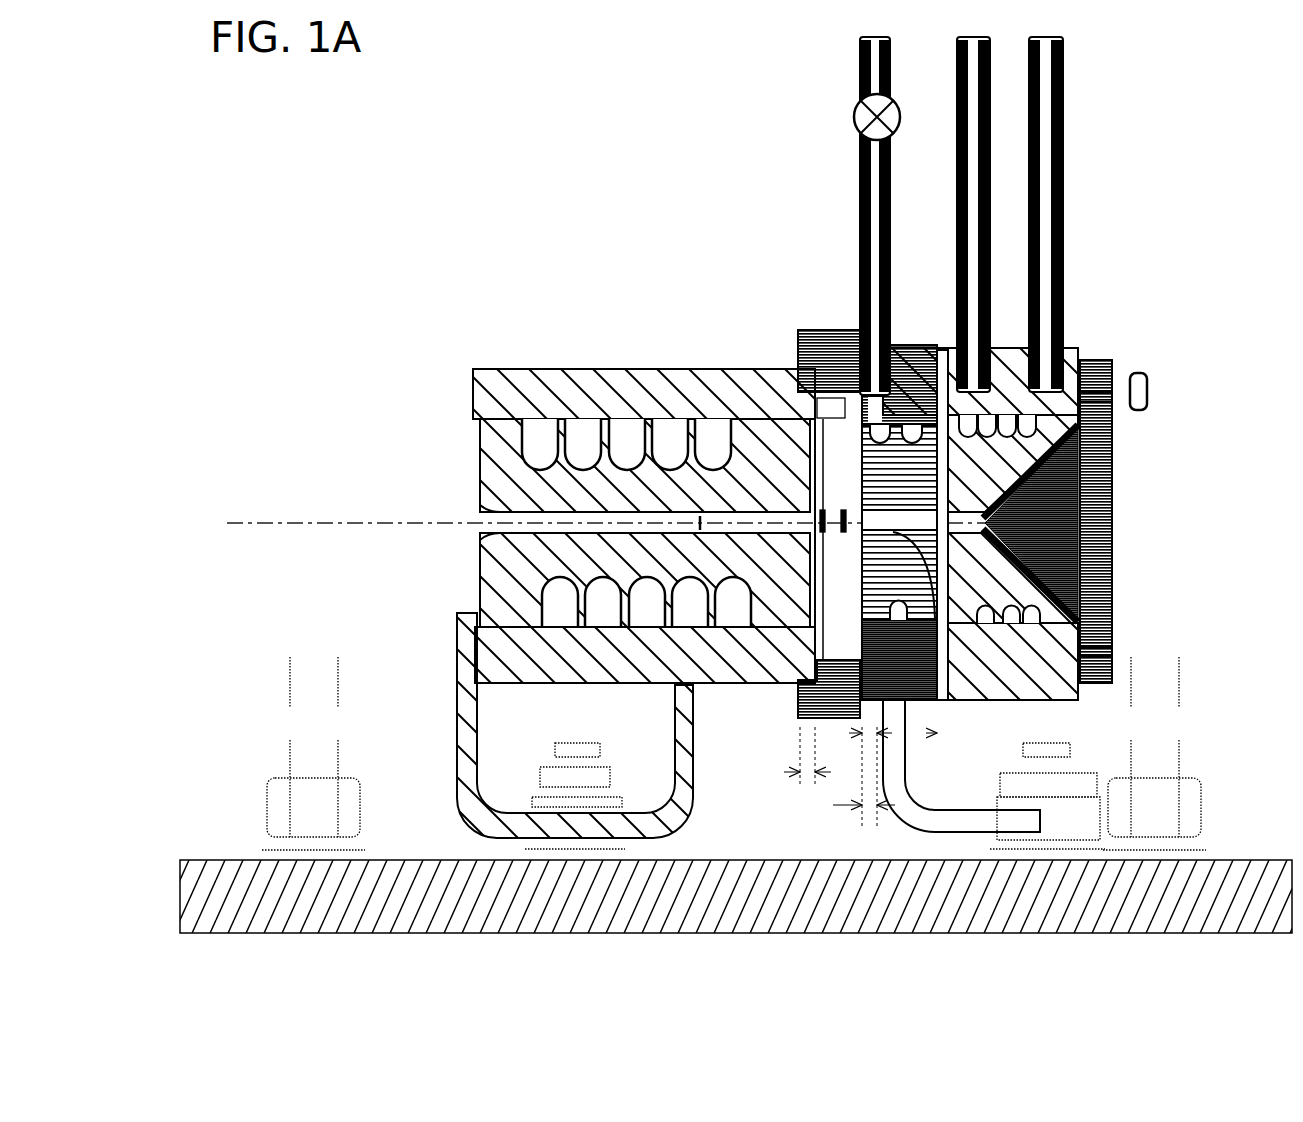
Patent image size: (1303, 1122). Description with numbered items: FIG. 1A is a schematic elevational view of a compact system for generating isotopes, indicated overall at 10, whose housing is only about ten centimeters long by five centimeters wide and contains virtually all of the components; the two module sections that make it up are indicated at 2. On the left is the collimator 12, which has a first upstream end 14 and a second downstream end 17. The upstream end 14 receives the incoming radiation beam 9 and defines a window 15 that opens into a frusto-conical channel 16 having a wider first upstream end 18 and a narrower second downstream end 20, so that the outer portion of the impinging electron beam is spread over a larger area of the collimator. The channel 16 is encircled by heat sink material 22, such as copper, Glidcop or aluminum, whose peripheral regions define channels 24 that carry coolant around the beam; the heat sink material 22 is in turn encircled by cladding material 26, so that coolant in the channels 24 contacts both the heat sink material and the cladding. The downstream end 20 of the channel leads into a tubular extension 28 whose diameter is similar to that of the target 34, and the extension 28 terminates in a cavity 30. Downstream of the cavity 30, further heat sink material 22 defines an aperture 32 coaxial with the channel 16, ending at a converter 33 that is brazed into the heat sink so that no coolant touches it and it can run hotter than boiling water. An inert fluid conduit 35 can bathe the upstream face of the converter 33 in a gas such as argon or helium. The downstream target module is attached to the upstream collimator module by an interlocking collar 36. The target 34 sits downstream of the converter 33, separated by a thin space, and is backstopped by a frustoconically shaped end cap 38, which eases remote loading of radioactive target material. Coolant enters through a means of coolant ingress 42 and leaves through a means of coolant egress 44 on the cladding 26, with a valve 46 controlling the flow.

The mold half 2 is at (399, 343).
The radiation beam 9 is at (307, 525).
The molding apparatus 10 is at (543, 213).
The collimator 12 is at (522, 587).
The first upstream end 14 is at (480, 596).
The window 15 is at (477, 538).
The frusto-conical shaped channel 16 is at (596, 522).
The second downstream end 17 is at (1105, 613).
The first upstream end of channel 18 is at (480, 512).
The second downstream end of channel 20 is at (700, 523).
The heat sink material 22 is at (1170, 440).
The coolant channels 24 is at (627, 443).
The cladding material 26 is at (668, 370).
The tubular shaped extension 28 is at (767, 523).
The cavity 30 is at (838, 467).
The aperture 32 is at (888, 531).
The converter 33 is at (935, 556).
The target 34 is at (985, 527).
The inert fluid conduit 35 is at (937, 560).
The interlocking collar 36 is at (842, 685).
The frustoconically shaped end cap 38 is at (1092, 520).
The means of coolant ingress 42 is at (882, 208).
The means of coolant egress 44 is at (1058, 135).
The valve 46 is at (865, 103).